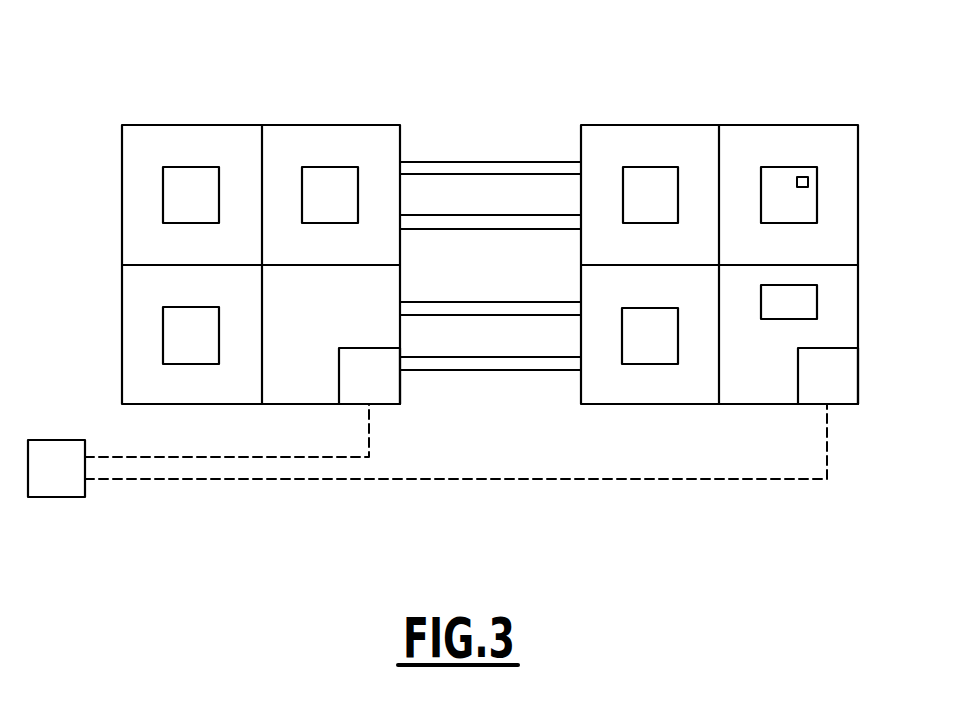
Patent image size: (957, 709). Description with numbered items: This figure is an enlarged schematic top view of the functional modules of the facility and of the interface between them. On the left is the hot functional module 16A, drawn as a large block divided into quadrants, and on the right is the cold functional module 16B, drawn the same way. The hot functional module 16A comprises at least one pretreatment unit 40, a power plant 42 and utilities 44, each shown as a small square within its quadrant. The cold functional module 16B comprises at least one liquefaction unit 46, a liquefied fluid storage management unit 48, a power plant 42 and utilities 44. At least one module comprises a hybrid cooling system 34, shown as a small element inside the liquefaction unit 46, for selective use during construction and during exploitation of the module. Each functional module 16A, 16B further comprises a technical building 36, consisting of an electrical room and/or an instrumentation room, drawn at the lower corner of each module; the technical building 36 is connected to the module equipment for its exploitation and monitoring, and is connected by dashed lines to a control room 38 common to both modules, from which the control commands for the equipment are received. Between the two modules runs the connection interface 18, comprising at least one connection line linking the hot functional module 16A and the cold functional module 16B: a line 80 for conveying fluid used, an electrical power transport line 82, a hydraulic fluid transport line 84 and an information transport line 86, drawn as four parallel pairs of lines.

The hot functional module 16A is at (355, 125).
The cold functional module 16B is at (698, 122).
The connection interface 18 is at (490, 224).
The hybrid cooling system 34 is at (808, 182).
The technical building 36 is at (383, 388).
The control room 38 is at (55, 485).
The pretreatment unit 40 is at (327, 177).
The power plant 42 is at (202, 175).
The utilities 44 is at (170, 340).
The liquefaction unit 46 is at (788, 167).
The liquefied fluid storage management unit 48 is at (810, 303).
The line for conveying fluid used 80 is at (529, 167).
The electrical power transport line 82 is at (470, 225).
The hydraulic fluid transport line 84 is at (490, 308).
The information transport line 86 is at (490, 364).